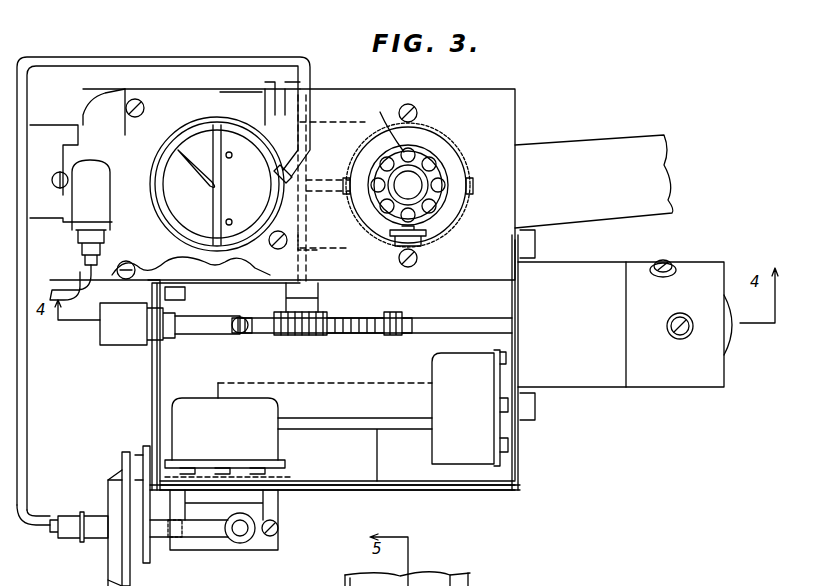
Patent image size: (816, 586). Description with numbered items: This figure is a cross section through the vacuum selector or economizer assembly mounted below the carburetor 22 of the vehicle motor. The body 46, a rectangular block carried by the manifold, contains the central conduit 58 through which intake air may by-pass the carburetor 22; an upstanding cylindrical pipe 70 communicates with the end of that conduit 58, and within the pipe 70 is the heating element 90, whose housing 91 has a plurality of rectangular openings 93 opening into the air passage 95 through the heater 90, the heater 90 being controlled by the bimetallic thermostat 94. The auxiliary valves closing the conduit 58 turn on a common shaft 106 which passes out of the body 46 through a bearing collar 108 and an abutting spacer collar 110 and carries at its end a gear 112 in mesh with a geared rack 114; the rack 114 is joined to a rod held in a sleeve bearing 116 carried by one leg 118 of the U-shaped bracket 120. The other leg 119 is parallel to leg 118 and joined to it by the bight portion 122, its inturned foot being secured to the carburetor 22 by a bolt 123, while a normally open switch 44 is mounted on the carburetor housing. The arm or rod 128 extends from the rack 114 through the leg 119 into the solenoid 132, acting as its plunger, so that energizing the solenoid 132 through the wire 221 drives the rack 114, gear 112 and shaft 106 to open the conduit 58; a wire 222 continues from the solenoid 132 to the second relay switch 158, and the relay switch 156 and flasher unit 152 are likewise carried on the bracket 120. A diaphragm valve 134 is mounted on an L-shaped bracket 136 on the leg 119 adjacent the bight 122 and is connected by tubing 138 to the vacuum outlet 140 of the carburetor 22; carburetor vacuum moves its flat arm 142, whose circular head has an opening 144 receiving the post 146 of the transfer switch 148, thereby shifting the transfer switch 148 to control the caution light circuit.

The carburetor 22 is at (180, 100).
The tubing 138 is at (263, 62).
The central conduit 58 is at (342, 124).
The rectangular openings 93 is at (394, 123).
The heating element 90 is at (430, 143).
The cylindrical pipe 70 is at (455, 142).
The air passage 95 is at (452, 155).
The body portion 46 is at (515, 112).
The housing 91 is at (388, 148).
The vacuum outlet 140 is at (296, 172).
The shaft 106 is at (306, 248).
The bimetallic thermostat 94 is at (432, 238).
The solenoid 132 is at (700, 262).
The bolt 123 is at (184, 292).
The normally open switch 44 is at (268, 286).
The bearing collar 108 is at (318, 292).
The spacer collar 110 is at (322, 312).
The gear 112 is at (328, 318).
The geared rack 114 is at (376, 316).
The sleeve bearing 116 is at (448, 318).
The wire 222 is at (656, 274).
The wire 221 is at (688, 336).
The arm or rod 128 is at (215, 333).
The leg 119 is at (150, 372).
The flasher unit 152 is at (378, 380).
The second relay switch 158 is at (444, 352).
The relay switch 156 is at (206, 395).
The U-shaped bracket 120 is at (146, 397).
The L-shaped bracket 136 is at (138, 448).
The diaphragm valve 134 is at (116, 470).
The leg 118 is at (520, 455).
The arm 142 is at (162, 548).
The opening 144 is at (240, 540).
The post 146 is at (262, 542).
The transfer switch 148 is at (279, 542).
The bight portion 122 is at (450, 492).